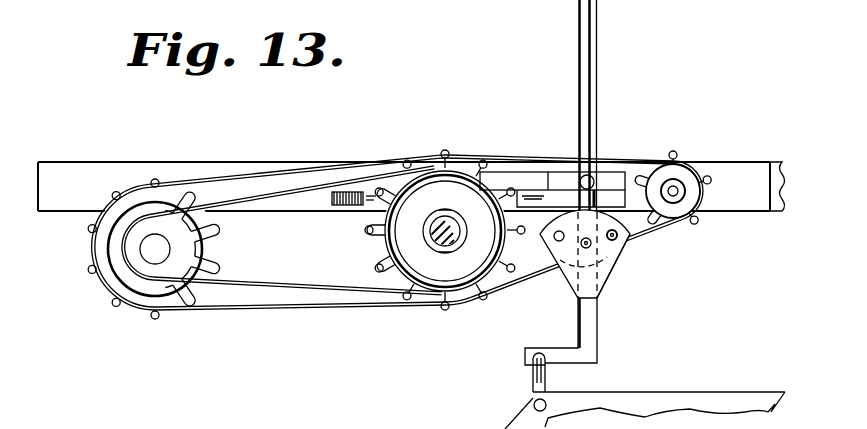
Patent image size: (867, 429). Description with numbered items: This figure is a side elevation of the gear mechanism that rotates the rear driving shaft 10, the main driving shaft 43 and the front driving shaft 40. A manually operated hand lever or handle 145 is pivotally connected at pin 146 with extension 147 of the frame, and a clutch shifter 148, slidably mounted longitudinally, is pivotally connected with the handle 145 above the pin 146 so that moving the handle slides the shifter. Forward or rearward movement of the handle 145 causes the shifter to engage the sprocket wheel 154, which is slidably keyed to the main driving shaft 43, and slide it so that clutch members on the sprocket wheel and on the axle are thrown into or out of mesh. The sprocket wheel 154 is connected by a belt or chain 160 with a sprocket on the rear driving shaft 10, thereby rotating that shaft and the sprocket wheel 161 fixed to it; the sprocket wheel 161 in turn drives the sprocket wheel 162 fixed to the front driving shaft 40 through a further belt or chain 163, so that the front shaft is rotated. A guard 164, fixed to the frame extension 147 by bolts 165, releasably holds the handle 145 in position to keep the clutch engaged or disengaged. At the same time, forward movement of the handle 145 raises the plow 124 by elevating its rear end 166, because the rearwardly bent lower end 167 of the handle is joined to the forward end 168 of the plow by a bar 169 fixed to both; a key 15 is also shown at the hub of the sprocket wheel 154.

The rear driving shaft 10 is at (146, 258).
The key 15 is at (433, 245).
The front driving shaft 40 is at (675, 200).
The main driving shaft 43 is at (458, 233).
The plow 124 is at (645, 391).
The hand lever or handle 145 is at (598, 80).
The pivot pin 146 is at (591, 246).
The frame extension 147 is at (628, 228).
The clutch shifter 148 is at (617, 202).
The sprocket wheel 154 is at (445, 230).
The belt or chain 160 is at (327, 289).
The sprocket wheel 161 is at (95, 250).
The sprocket wheel 162 is at (690, 173).
The chain belt 163 is at (246, 311).
The guard 164 is at (612, 282).
The bolts 165 is at (555, 238).
The rear end of the plow 166 is at (178, 254).
The rearwardly bent lower end of handle 167 is at (530, 352).
The forward end of the plow 168 is at (512, 413).
The bar 169 is at (546, 377).